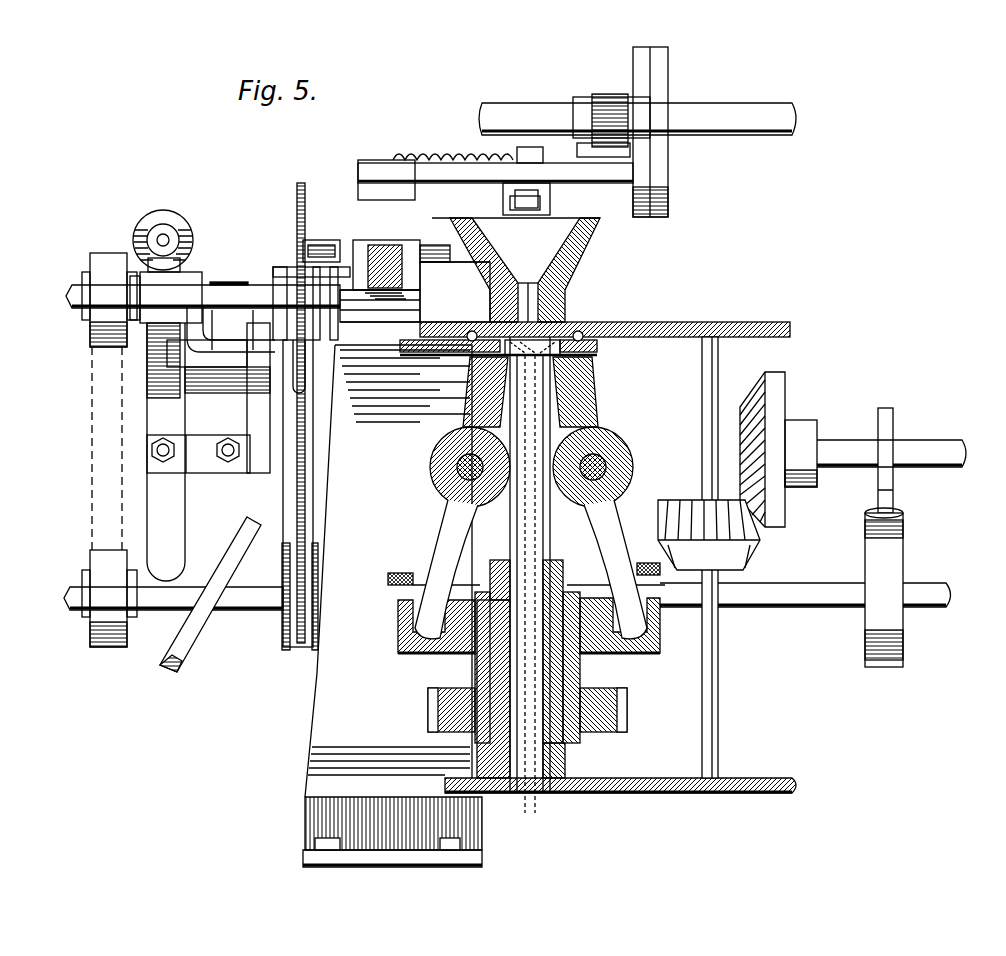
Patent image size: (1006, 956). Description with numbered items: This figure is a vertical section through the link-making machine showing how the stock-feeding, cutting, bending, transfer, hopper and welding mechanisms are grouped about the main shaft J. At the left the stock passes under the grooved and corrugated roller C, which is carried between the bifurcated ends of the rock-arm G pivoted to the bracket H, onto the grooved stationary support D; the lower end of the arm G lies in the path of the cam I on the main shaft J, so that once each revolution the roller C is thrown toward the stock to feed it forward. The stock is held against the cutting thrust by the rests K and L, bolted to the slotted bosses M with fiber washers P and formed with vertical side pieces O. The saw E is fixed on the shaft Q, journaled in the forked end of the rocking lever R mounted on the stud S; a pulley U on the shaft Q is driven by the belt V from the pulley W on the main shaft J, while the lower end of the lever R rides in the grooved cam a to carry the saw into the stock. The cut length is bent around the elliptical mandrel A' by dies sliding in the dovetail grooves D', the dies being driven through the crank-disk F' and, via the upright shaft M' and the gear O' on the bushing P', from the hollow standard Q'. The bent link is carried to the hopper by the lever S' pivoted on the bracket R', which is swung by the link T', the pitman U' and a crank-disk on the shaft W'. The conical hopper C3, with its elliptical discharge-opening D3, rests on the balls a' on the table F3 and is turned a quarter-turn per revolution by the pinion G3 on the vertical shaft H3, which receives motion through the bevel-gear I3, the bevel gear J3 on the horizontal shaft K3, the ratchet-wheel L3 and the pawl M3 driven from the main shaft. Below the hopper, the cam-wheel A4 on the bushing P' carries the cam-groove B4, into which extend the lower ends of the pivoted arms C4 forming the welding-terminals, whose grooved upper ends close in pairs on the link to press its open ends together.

The grooved and corrugated roller C is at (163, 210).
The crank-disk F' is at (182, 221).
The rock-arm G is at (178, 262).
The saw shaft Q is at (203, 278).
The pulley U is at (88, 300).
The belt V is at (100, 375).
The pulley W is at (83, 598).
The main shaft J is at (262, 612).
The cam I is at (180, 362).
The stationary support D is at (208, 398).
The bracket H is at (205, 470).
The rocking lever R is at (226, 586).
The saw E is at (304, 183).
The rest L is at (330, 240).
The boss M is at (296, 289).
The cam a is at (300, 512).
The stud S is at (392, 606).
The fiber washers P is at (516, 270).
The vertical side pieces O is at (401, 221).
The stop-rest K is at (452, 240).
The elliptical former or mandrel A' is at (386, 251).
The upright shaft M' is at (455, 292).
The dovetail grooves D' is at (380, 311).
The lever S' is at (495, 173).
The link T' is at (573, 151).
The pitman U' is at (646, 132).
The shaft W' is at (637, 99).
The bracket or arm R' is at (552, 197).
The hopper C3 is at (593, 255).
The discharge-opening D3 is at (540, 300).
The table F3 is at (555, 332).
The balls a' is at (556, 317).
The block b is at (532, 347).
The pinion G3 is at (665, 322).
The vertical shaft H3 is at (702, 410).
The bevel gear J3 is at (782, 388).
The bevel-gear I3 is at (680, 505).
The horizontal shaft K3 is at (850, 445).
The ratchet-wheel L3 is at (895, 425).
The pawl M3 is at (900, 515).
The bushing P' is at (490, 575).
The hollow standard Q' is at (603, 669).
The gear O' is at (512, 710).
The cam-groove B4 is at (420, 654).
The cam-wheel A4 is at (509, 608).
The pivoted arms C4 is at (430, 555).